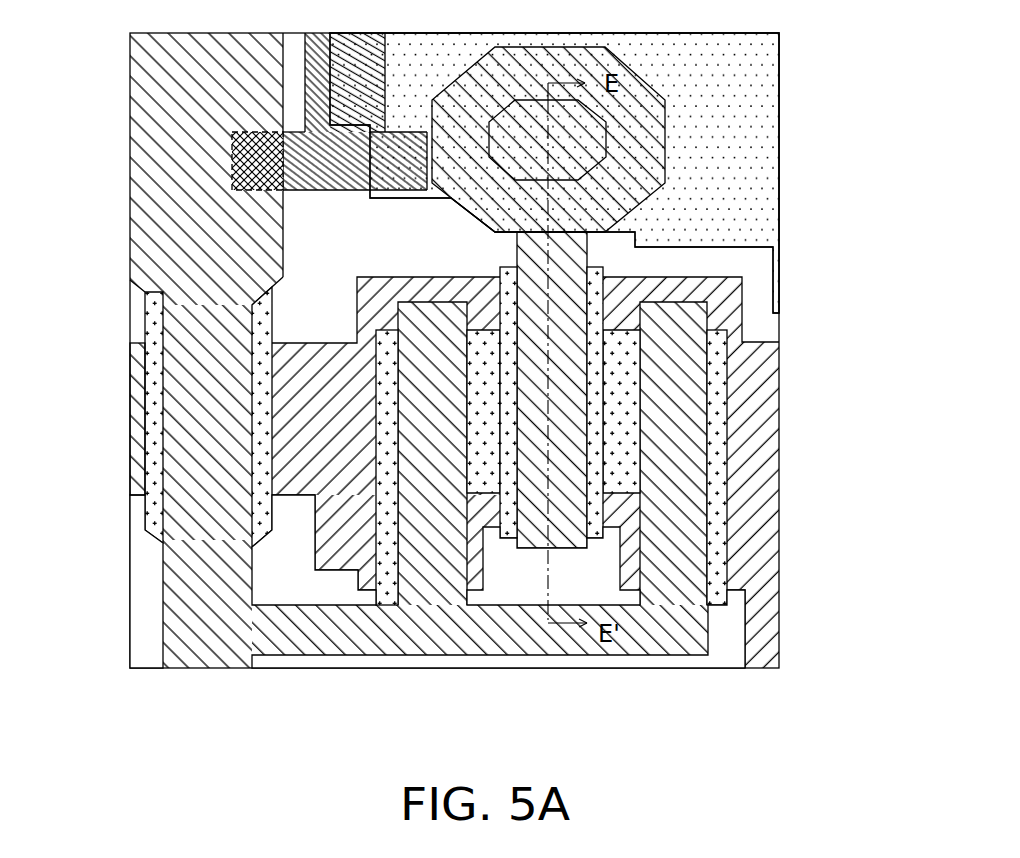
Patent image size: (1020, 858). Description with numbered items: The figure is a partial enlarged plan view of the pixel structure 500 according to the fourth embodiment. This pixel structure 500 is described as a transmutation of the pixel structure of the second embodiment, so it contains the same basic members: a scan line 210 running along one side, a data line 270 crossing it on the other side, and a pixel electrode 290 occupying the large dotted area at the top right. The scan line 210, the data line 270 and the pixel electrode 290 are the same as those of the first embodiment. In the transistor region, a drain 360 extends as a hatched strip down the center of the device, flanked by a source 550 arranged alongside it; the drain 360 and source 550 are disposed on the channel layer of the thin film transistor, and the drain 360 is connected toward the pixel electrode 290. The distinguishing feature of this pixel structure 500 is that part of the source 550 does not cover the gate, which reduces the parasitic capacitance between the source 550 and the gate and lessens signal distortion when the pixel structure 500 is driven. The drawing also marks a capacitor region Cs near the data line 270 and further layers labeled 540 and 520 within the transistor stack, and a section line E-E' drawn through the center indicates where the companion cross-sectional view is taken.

The pixel structure 500 is at (802, 780).
The pixel electrode 290 is at (762, 136).
The data line 270 is at (150, 175).
The storage capacitor Cs is at (325, 178).
The scan line 210 is at (135, 417).
The drain 360 is at (570, 390).
The source 550 is at (673, 423).
The ohmic contact layer 540 is at (613, 473).
The source electrode 520 is at (745, 547).